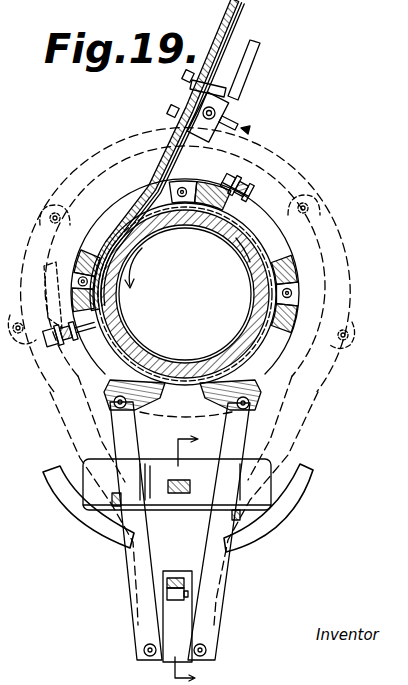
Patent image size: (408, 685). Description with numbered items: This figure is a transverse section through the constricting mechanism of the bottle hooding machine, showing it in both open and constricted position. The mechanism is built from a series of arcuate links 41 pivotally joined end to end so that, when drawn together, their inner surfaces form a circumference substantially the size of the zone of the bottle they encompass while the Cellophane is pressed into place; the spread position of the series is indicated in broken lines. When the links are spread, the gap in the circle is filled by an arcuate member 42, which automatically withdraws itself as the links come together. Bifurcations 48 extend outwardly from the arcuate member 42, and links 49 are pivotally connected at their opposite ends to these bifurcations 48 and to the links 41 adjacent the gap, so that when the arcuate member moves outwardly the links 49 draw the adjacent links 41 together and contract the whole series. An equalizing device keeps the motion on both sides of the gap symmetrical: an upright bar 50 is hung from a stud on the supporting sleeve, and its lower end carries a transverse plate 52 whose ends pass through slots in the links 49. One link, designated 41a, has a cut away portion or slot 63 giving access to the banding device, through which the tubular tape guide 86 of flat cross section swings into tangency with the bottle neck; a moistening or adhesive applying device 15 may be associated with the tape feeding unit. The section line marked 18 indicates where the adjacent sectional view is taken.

The moistening or adhesive applying device 15 is at (236, 92).
The section line 18 is at (187, 554).
The arcuate links 41 is at (300, 297).
The link with slot 41a is at (72, 262).
The arcuate member 42 is at (110, 527).
The bifurcations 48 is at (170, 617).
The links 49 is at (223, 560).
The upright bar 50 is at (182, 495).
The transverse plate 52 is at (83, 462).
The cut away portion or slot 63 is at (98, 212).
The tubular tape guide 86 is at (226, 16).